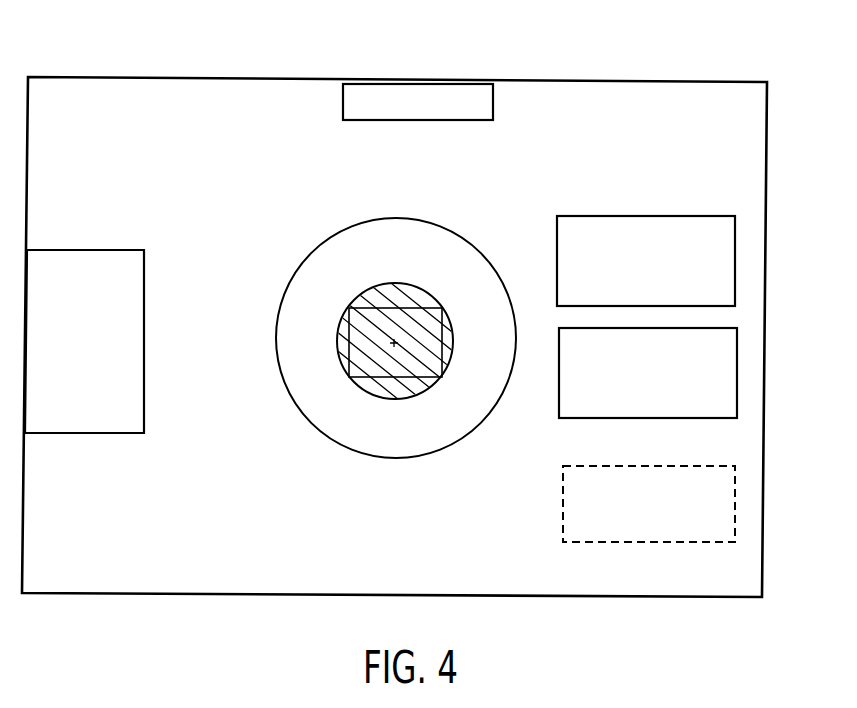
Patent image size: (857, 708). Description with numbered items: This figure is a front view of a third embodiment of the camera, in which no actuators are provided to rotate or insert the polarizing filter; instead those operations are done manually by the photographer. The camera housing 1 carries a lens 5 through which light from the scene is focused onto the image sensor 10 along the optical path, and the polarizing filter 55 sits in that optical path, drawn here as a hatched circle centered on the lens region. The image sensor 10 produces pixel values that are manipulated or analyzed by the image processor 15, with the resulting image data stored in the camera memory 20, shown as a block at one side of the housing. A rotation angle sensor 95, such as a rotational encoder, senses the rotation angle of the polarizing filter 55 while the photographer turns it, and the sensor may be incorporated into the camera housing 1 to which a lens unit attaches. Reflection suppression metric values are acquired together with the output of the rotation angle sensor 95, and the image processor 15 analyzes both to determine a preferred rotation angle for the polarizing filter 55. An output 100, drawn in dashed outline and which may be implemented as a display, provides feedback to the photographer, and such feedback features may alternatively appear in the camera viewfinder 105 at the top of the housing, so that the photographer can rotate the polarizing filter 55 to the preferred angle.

The camera housing 1 is at (686, 82).
The lens 5 is at (443, 229).
The image sensor 10 is at (452, 335).
The image processor 15 is at (737, 375).
The camera memory 20 is at (88, 250).
The polarizing filter 55 is at (392, 400).
The rotation angle sensor 95 is at (735, 262).
The output 100 is at (737, 503).
The camera viewfinder 105 is at (493, 98).